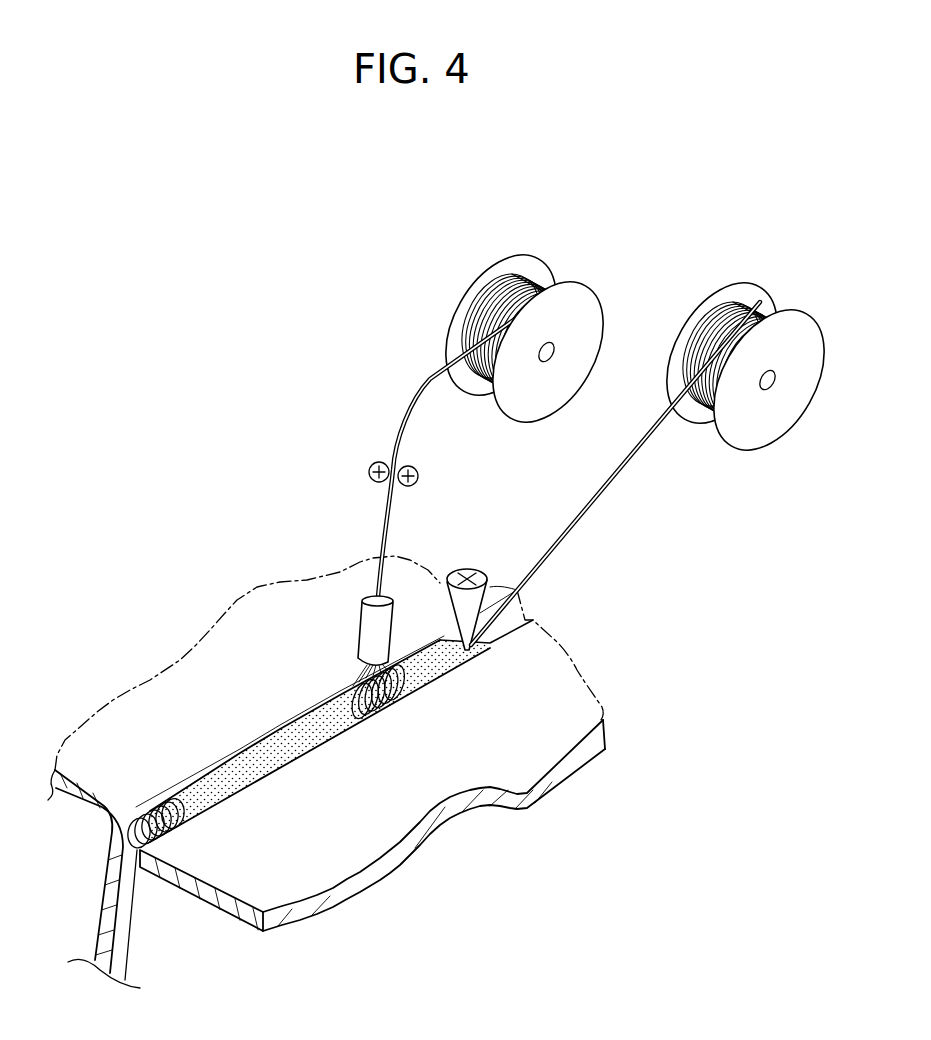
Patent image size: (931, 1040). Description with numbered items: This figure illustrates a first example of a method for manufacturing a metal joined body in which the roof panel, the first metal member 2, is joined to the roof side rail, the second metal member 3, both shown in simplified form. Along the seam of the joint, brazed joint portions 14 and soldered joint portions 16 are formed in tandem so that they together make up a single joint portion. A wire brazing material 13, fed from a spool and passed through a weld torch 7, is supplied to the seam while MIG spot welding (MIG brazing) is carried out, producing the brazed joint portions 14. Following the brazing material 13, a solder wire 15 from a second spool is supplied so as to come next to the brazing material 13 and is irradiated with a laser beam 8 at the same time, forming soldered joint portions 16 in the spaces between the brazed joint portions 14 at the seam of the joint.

The roof panel (first metal member) 2 is at (165, 682).
The roof side rail (second metal member) 3 is at (387, 854).
The weld torch 7 is at (363, 625).
The laser beam 8 is at (463, 567).
The wire brazing material 13 is at (420, 398).
The brazed joint portion 14 is at (141, 810).
The solder wire 15 is at (640, 440).
The soldered joint portion 16 is at (250, 762).